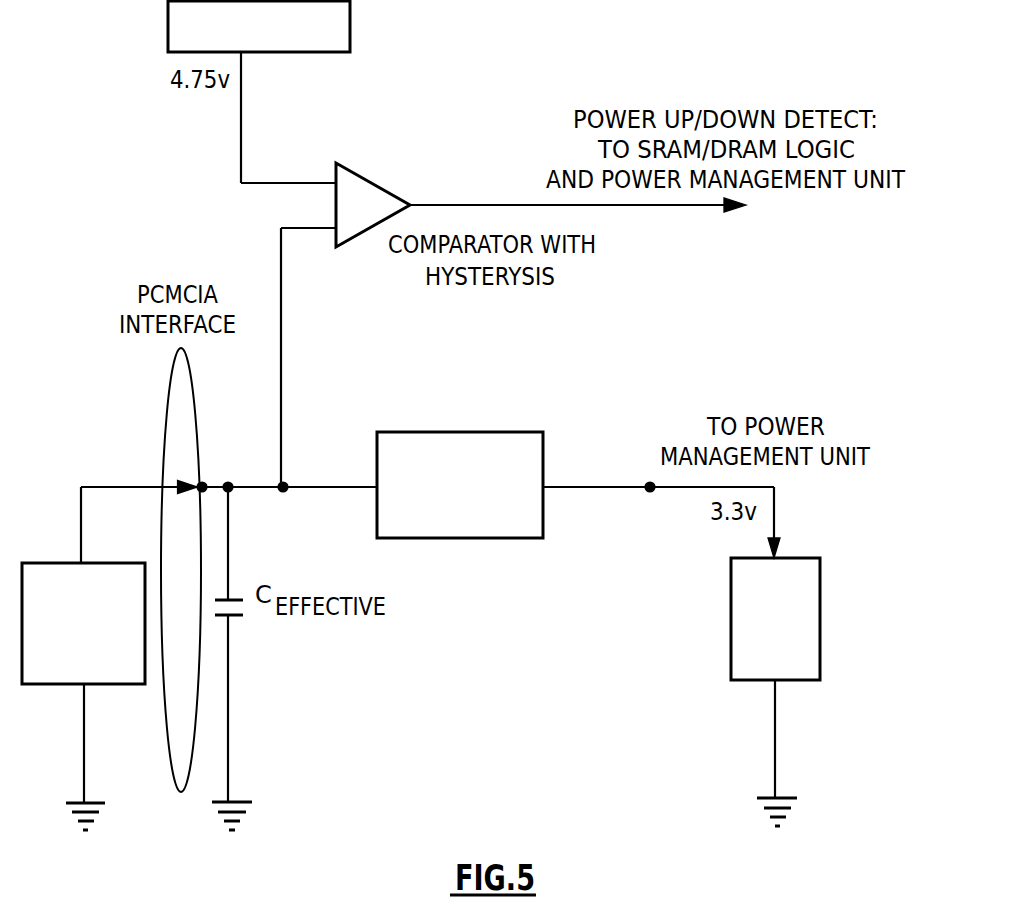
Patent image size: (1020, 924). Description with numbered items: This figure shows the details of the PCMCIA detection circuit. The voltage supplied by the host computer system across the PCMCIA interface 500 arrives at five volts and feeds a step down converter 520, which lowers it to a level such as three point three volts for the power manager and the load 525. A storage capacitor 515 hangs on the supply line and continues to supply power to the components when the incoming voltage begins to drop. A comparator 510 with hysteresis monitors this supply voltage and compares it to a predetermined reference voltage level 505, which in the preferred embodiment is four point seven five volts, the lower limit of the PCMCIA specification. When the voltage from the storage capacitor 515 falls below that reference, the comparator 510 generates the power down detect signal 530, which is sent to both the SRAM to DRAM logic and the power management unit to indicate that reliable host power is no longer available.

The voltage supplied by the host computer system across the PCMCIA interface 500 is at (112, 487).
The predetermined reference voltage level 505 is at (352, 22).
The comparator 510 is at (378, 182).
The storage capacitor 515 is at (240, 618).
The step down converter 520 is at (494, 432).
The load 525 is at (802, 558).
The power down detect signal 530 is at (710, 207).